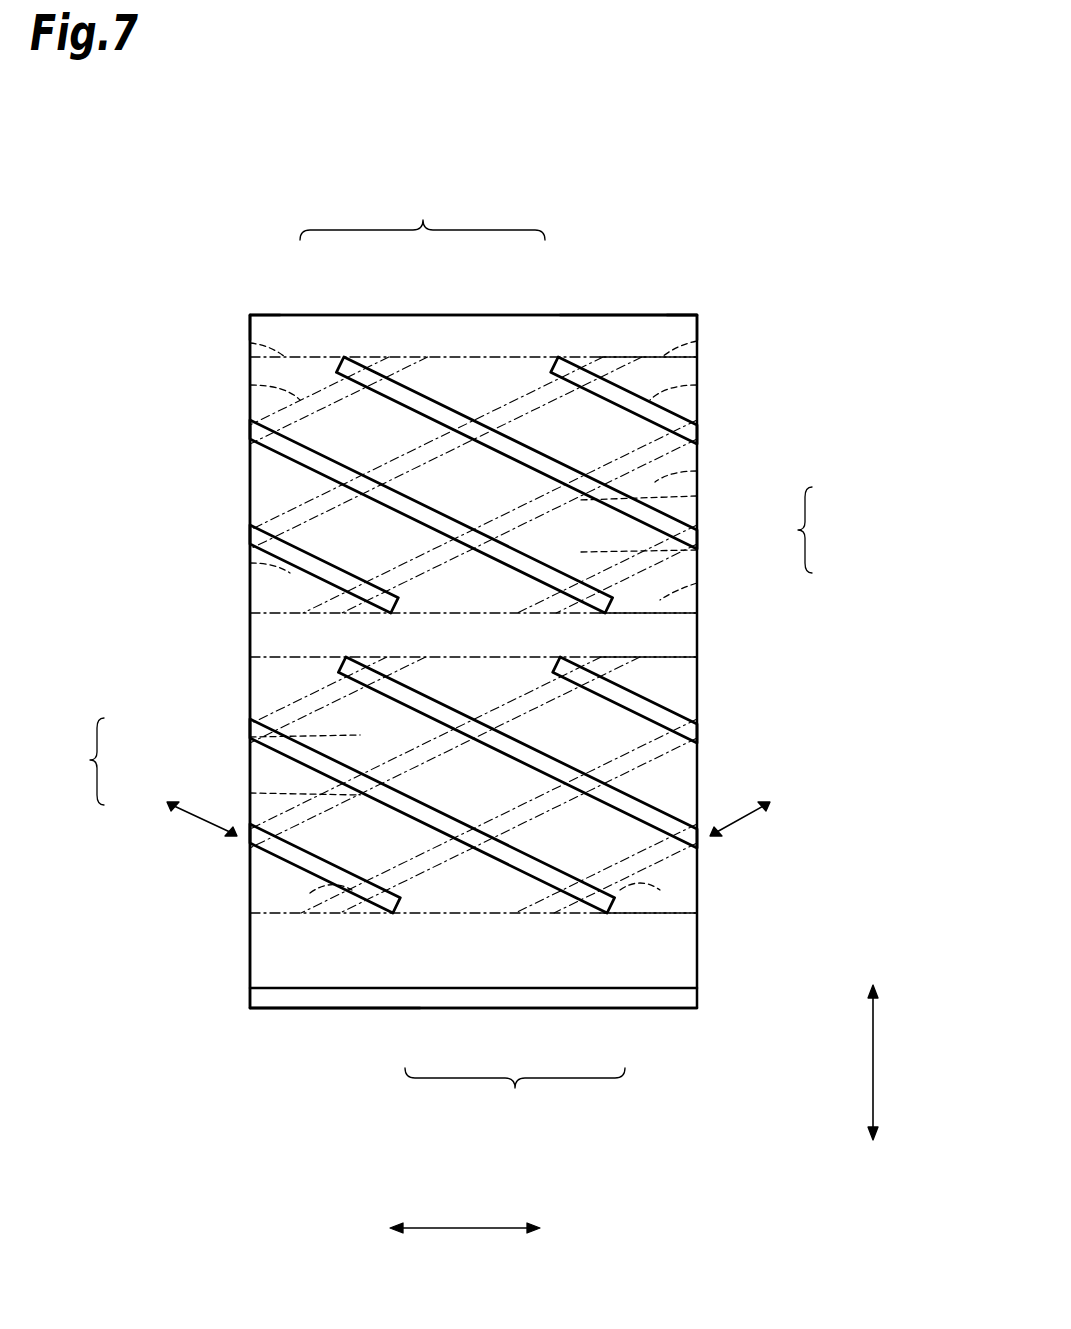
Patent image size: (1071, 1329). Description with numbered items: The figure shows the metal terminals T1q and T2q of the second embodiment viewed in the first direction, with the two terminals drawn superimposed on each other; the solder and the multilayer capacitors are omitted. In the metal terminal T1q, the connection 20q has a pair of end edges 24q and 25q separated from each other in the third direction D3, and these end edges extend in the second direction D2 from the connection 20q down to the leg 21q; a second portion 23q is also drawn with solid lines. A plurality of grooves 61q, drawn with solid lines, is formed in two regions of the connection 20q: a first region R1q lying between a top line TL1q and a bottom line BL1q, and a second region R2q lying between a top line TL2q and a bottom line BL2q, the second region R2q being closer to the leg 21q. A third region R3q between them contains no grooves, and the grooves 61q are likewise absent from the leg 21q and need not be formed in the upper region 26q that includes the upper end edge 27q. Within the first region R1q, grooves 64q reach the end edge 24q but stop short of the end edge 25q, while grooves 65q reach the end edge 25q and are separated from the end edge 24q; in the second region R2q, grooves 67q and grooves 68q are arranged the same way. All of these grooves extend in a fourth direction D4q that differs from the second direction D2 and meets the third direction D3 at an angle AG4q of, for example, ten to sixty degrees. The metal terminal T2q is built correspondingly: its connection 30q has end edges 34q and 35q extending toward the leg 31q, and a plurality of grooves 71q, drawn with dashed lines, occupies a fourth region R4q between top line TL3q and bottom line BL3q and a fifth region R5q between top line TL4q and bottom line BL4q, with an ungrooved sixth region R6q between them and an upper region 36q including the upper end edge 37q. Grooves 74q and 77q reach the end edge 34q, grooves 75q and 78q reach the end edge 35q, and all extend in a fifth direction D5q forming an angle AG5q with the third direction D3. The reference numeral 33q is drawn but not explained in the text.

The connection 20q is at (250, 508).
The leg 21q is at (250, 960).
The second portion 23q is at (250, 1000).
The end edge 24q is at (250, 386).
The end edge 25q is at (697, 385).
The upper region 26q is at (250, 343).
The upper end edge 27q is at (280, 315).
The connection 30q is at (697, 471).
The leg 31q is at (697, 958).
The bottom surface 33q is at (697, 1008).
The end edge 34q is at (697, 583).
The end edge 35q is at (250, 563).
The upper region 36q is at (697, 340).
The upper end edge 37q is at (612, 315).
The grooves 61q is at (462, 655).
The grooves 64q is at (330, 562).
The grooves 65q is at (505, 452).
The grooves 67q is at (502, 862).
The grooves 68q is at (640, 722).
The grooves 71q is at (452, 646).
The grooves 74q is at (697, 549).
The grooves 75q is at (697, 495).
The grooves 77q is at (250, 793).
The grooves 78q is at (250, 737).
The metal terminal T1q is at (250, 317).
The metal terminal T2q is at (697, 317).
The top line TL1q is at (250, 328).
The top line TL2q is at (340, 655).
The top line TL3q is at (697, 327).
The top line TL4q is at (697, 720).
The bottom line BL1q is at (265, 637).
The bottom line BL2q is at (310, 913).
The bottom line BL3q is at (655, 613).
The bottom line BL4q is at (697, 925).
The first region R1q is at (250, 475).
The second region R2q is at (250, 677).
The third region R3q is at (320, 614).
The fourth region R4q is at (697, 457).
The fifth region R5q is at (697, 692).
The sixth region R6q is at (697, 673).
The angle AG4q is at (310, 893).
The angle AG5q is at (620, 890).
The second direction D2 is at (882, 1058).
The third direction D3 is at (465, 1250).
The fourth direction D4q is at (212, 828).
The fifth direction D5q is at (735, 828).